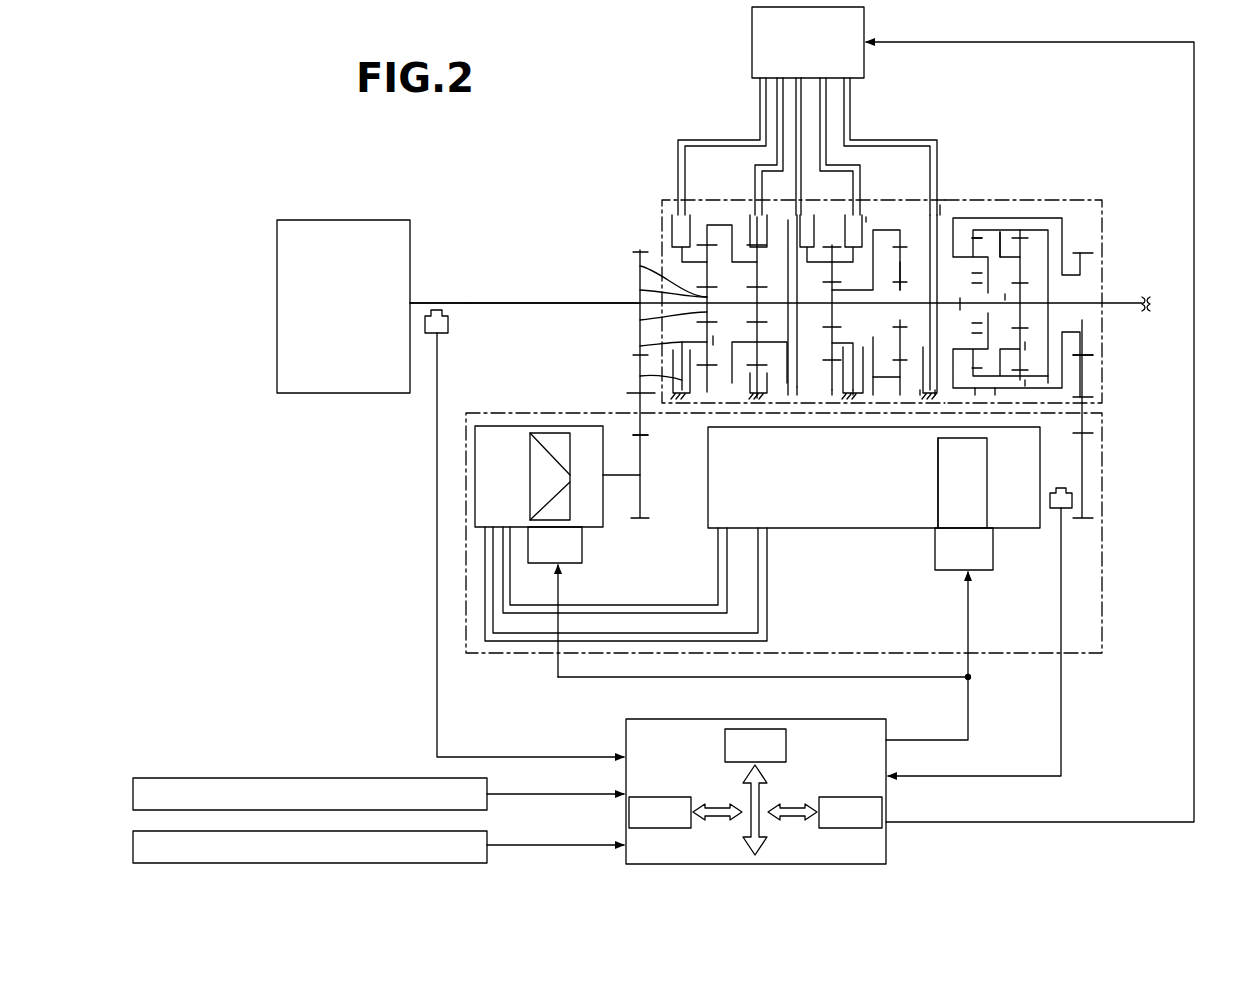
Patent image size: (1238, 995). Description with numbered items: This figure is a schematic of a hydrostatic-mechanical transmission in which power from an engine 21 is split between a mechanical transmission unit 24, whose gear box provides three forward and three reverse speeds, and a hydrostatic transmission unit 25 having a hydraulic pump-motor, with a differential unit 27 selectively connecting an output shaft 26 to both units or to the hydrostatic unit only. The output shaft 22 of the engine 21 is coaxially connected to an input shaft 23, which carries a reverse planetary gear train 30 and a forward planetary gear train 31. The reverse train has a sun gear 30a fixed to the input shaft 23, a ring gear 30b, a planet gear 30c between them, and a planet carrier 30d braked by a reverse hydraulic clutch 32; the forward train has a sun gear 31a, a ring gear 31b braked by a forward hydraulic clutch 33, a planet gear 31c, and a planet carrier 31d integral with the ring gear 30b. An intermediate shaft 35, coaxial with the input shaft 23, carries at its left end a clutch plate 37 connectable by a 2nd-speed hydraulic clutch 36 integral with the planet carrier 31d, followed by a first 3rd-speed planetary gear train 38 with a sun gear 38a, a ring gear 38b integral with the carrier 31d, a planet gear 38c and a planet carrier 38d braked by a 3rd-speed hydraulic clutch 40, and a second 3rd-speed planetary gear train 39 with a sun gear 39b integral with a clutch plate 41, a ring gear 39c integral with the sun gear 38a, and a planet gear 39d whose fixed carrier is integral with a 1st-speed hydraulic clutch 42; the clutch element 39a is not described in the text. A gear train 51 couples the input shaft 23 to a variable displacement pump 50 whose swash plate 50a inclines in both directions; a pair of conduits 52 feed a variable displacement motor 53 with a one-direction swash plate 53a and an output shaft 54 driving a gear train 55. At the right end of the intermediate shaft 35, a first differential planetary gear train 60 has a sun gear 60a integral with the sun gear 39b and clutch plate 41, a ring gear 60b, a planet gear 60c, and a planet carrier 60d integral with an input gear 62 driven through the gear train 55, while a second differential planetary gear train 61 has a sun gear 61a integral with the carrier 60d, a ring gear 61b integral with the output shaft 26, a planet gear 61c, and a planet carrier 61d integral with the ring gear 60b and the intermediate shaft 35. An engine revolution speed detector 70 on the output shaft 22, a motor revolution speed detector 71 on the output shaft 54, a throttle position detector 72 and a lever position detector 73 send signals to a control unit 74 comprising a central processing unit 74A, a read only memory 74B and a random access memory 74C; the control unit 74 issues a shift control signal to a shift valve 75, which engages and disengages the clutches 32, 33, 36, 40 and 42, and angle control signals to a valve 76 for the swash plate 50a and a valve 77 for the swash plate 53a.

The engine 21 is at (326, 220).
The output shaft of the engine 22 is at (452, 303).
The input shaft 23 is at (568, 303).
The mechanical transmission unit 24 is at (662, 200).
The hydrostatic transmission unit 25 is at (1102, 574).
The output shaft 26 is at (1150, 308).
The differential unit 27 is at (1086, 200).
The reverse planetary gear train 30 is at (696, 215).
The sun gear 30a is at (640, 320).
The ring gear 30b is at (641, 436).
The planet gear 30c is at (640, 266).
The planet carrier 30d is at (640, 376).
The forward planetary gear train 31 is at (757, 217).
The sun gear 31a is at (640, 346).
The ring gear 31b is at (757, 398).
The planet gear 31c is at (640, 292).
The planet carrier 31d is at (713, 336).
The reverse hydraulic clutch 32 is at (690, 232).
The forward hydraulic clutch 33 is at (707, 297).
The intermediate shaft 35 is at (832, 292).
The 2nd-speed hydraulic clutch 36 is at (808, 215).
The clutch plate 37 is at (800, 245).
The first 3rd-speed planetary gear train 38 is at (866, 215).
The sun gear 38a is at (797, 395).
The ring gear 38b is at (832, 393).
The planet gear 38c is at (853, 395).
The planet carrier 38d is at (832, 327).
The second 3rd-speed planetary gear train 39 is at (940, 206).
The clutch element 39a is at (936, 395).
The sun gear 39b is at (873, 396).
The ring gear 39c is at (920, 395).
The planet gear 39d is at (900, 395).
The 3rd-speed hydraulic clutch 40 is at (866, 218).
The clutch plate 41 is at (903, 262).
The 1st-speed hydraulic clutch 42 is at (930, 215).
The variable displacement pump 50 is at (494, 426).
The discharge controlling variable-angle swash plate 50a is at (522, 427).
The gear train 51 is at (641, 456).
The conduits 52 is at (652, 605).
The variable displacement motor 53 is at (837, 528).
The discharge controlling variable-angle swash plate 53a is at (988, 530).
The output shaft of the variable displacement motor 54 is at (1074, 498).
The gear train 55 is at (1094, 452).
The first differential planetary gear train 60 is at (976, 228).
The sun gear 60a is at (960, 298).
The ring gear 60b is at (1002, 232).
The planet gear 60c is at (975, 230).
The planet carrier 60d is at (975, 395).
The second differential planetary gear train 61 is at (1040, 218).
The sun gear 61a is at (1005, 294).
The ring gear 61b is at (1025, 380).
The planet gear 61c is at (1025, 342).
The planet carrier 61d is at (995, 395).
The input gear 62 is at (1084, 262).
The engine revolution speed detector 70 is at (448, 322).
The motor revolution speed detector 71 is at (1061, 512).
The throttle position detector 72 is at (137, 778).
The lever position detector 73 is at (133, 860).
The control unit 74 is at (636, 852).
The central processing unit 74A is at (786, 740).
The read only memory 74B is at (660, 797).
The random access memory 74C is at (851, 828).
The shift valve 75 is at (752, 26).
The valve 76 is at (582, 549).
The valve 77 is at (986, 572).